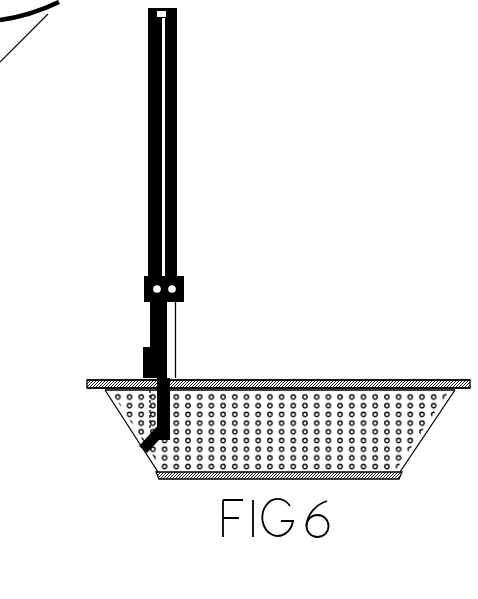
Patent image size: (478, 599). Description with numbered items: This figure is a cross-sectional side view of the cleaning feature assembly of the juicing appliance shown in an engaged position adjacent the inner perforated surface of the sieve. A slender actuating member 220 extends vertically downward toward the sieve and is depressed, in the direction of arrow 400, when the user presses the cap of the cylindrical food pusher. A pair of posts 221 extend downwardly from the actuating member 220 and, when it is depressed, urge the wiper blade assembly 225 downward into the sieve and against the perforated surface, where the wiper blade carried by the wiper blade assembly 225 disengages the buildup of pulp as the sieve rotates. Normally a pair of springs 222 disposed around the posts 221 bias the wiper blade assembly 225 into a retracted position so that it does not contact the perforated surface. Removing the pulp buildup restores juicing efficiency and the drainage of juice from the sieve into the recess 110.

The recess 110 is at (435, 380).
The actuating member 220 is at (177, 85).
The posts 221 is at (175, 379).
The springs 222 is at (148, 330).
The wiper blade assembly 225 is at (177, 318).
The arrow 400 is at (102, 97).